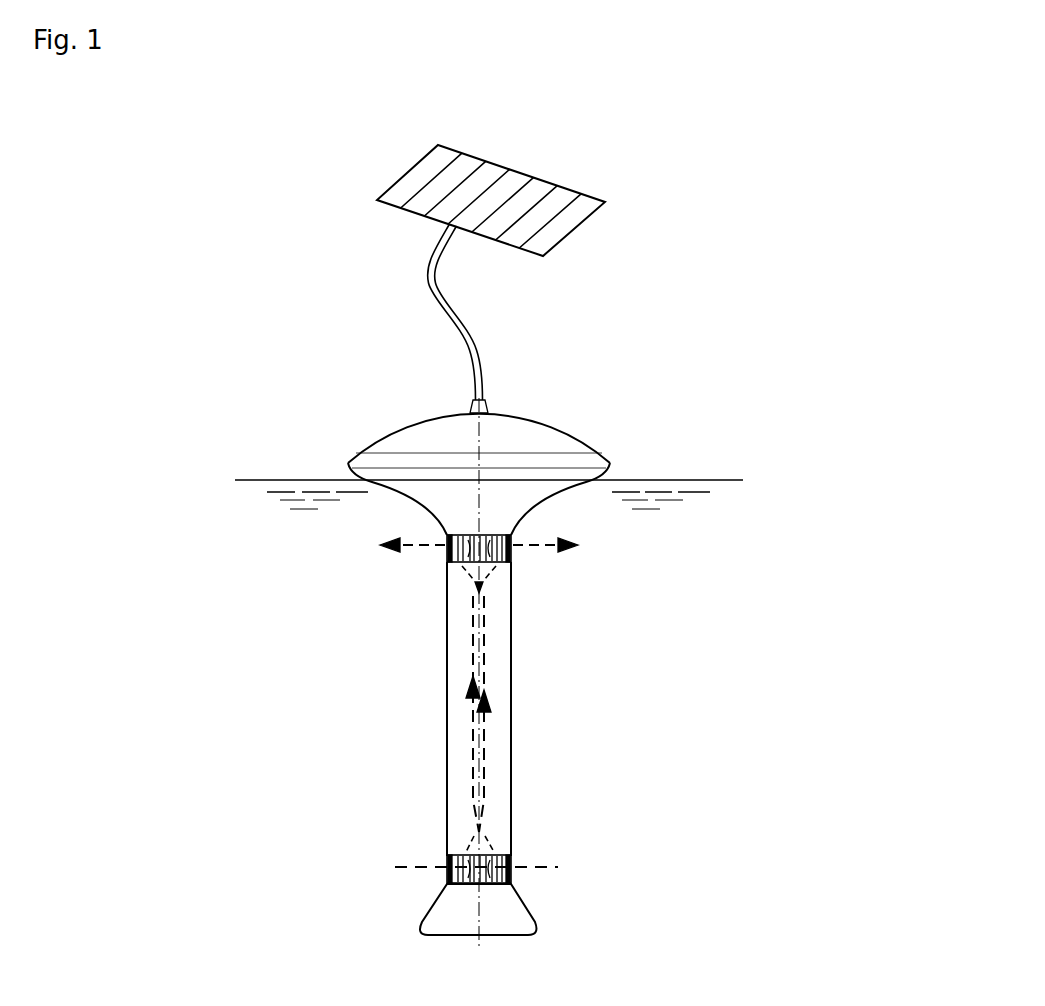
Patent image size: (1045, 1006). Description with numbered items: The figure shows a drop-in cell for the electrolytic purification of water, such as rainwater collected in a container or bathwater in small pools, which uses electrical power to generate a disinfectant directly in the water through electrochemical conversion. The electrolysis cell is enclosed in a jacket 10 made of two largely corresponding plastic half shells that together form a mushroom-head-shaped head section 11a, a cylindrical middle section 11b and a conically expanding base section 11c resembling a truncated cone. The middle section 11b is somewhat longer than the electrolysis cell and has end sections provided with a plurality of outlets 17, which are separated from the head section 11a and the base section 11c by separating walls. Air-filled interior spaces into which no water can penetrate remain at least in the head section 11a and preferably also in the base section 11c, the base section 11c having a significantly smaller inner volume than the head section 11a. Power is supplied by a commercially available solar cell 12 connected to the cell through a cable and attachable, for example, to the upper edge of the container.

The jacket 10 is at (437, 700).
The head section 11a is at (563, 430).
The middle section 11b is at (511, 677).
The base section 11c is at (535, 912).
The solar cell 12 is at (508, 182).
The outlets 17 is at (503, 547).